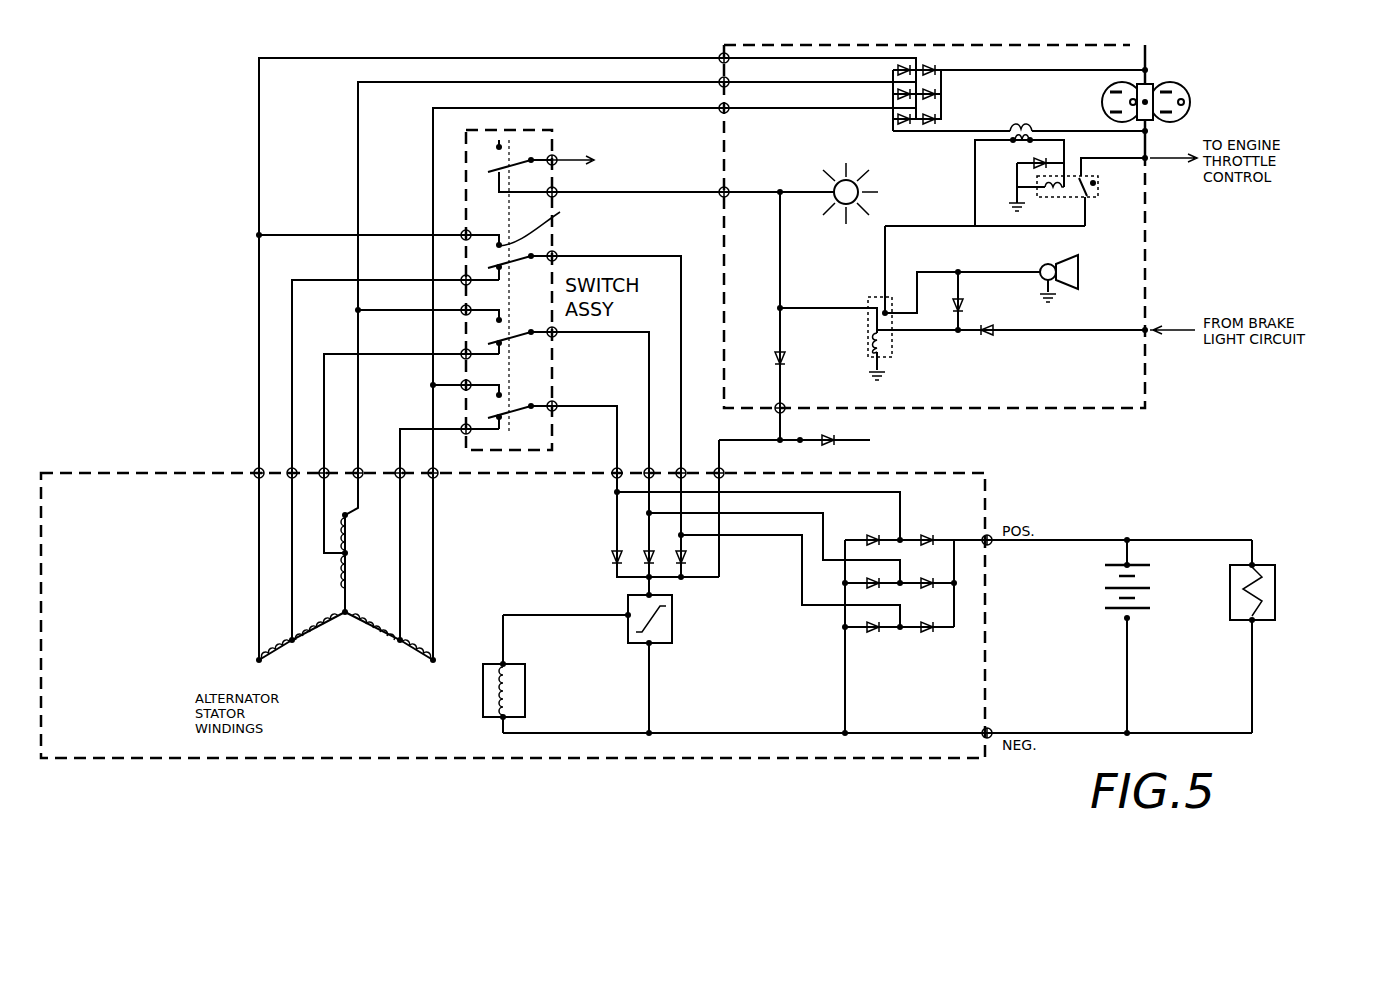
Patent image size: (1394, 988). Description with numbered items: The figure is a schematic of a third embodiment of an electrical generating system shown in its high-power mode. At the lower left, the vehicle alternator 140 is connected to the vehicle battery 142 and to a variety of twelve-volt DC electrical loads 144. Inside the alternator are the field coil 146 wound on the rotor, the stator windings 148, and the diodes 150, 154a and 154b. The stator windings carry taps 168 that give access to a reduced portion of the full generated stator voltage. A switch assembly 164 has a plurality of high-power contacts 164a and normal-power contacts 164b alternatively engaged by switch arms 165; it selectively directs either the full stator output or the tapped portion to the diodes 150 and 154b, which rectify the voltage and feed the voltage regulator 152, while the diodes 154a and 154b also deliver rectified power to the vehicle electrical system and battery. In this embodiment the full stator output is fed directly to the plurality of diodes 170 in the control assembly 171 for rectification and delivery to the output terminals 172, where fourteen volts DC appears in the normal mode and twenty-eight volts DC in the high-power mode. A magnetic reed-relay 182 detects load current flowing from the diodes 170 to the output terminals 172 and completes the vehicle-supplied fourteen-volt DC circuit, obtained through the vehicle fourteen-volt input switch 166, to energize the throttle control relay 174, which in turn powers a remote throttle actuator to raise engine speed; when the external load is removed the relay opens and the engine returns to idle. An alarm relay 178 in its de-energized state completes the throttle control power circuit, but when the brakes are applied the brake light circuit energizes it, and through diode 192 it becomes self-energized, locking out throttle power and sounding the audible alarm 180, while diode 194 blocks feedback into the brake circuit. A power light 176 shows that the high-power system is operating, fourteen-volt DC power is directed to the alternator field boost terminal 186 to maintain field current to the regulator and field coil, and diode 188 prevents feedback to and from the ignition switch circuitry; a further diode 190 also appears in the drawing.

The vehicle alternator 140 is at (477, 760).
The vehicle battery 142 is at (1120, 630).
The 12-volt DC electrical loads 144 is at (1280, 592).
The field coil 146 is at (520, 657).
The stator windings 148 is at (352, 633).
The diodes 150 is at (605, 557).
The voltage regulator 152 is at (660, 648).
The diodes 154a is at (933, 617).
The diodes 154b is at (860, 612).
The switch assembly 164 is at (560, 238).
The high-power contacts 164a is at (500, 336).
The normal-power contacts 164b is at (630, 212).
The switch arms 165 is at (515, 412).
The vehicle 14-volt input switch 166 is at (497, 160).
The taps 168 is at (290, 635).
The diodes 170 is at (947, 93).
The control assembly 171 is at (1145, 278).
The output terminals 172 is at (1162, 80).
The throttle control relay 174 is at (1103, 193).
The power light 176 is at (858, 165).
The alarm relay 178 is at (905, 340).
The audible alarm 180 is at (1050, 258).
The magnetic reed-relay 182 is at (1016, 128).
The alternator field boost terminal 186 is at (790, 405).
The diode 188 is at (823, 446).
The diode 190 is at (794, 332).
The diode 192 is at (975, 308).
The diode 194 is at (1000, 340).